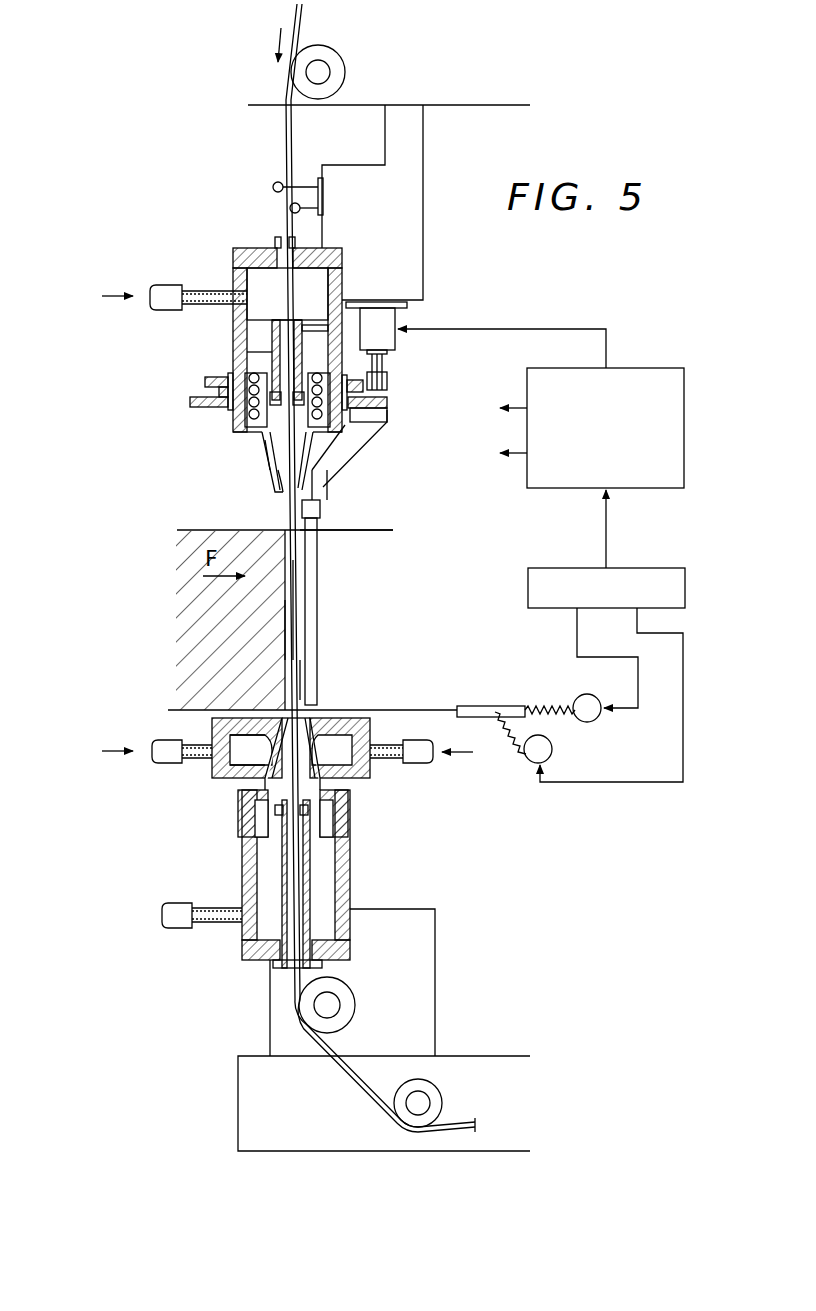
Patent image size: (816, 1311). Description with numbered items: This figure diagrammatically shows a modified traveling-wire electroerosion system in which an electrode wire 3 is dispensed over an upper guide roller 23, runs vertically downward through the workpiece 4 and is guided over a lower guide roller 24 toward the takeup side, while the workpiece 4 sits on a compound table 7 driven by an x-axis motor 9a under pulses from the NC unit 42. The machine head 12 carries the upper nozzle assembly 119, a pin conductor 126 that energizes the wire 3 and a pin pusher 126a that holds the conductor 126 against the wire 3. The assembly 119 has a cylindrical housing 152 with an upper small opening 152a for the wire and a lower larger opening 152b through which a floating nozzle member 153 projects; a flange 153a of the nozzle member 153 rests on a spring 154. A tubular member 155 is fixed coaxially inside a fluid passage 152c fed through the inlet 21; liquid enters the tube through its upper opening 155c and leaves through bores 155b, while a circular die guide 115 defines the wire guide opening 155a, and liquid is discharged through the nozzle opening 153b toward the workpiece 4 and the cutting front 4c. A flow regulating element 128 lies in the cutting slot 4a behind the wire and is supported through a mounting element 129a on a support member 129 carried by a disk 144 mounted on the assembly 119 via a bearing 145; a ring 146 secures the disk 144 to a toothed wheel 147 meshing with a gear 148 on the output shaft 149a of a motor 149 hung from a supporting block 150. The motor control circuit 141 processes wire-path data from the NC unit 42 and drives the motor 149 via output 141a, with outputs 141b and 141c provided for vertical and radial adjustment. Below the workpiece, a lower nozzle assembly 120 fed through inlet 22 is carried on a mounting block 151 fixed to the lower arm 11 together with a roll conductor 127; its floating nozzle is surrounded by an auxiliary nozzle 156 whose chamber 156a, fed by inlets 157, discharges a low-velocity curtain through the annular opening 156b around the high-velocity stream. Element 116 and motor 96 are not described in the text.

The electrode wire 3 is at (284, 40).
The upper guide roller 23 is at (346, 74).
The machine head 12 is at (455, 108).
The supporting block 150 is at (424, 186).
The pin pusher 126a is at (278, 182).
The pin conductor 126 is at (290, 208).
The cylindrical housing 152 is at (235, 262).
The upper small opening 152a is at (283, 240).
The fluid passage 152c is at (322, 278).
The inlet 21 is at (165, 282).
The tubular member 155 is at (262, 334).
The upper opening 155c is at (315, 322).
The bores 155b is at (245, 352).
The upper nozzle assembly 119 is at (225, 366).
The toothed wheel 147 is at (210, 378).
The ring 146 is at (205, 395).
The bearing 145 is at (243, 405).
The nozzle opening 153b is at (290, 497).
The motor 149 is at (392, 332).
The flange 153a is at (379, 366).
The output shaft 149a is at (389, 383).
The gear 148 is at (388, 405).
The disk 144 is at (388, 420).
The support member 129 is at (350, 440).
The circular die guide 115 is at (322, 478).
The mounting element 129a is at (320, 512).
The flow regulating element 128 is at (318, 576).
The nozzle member 153 is at (266, 472).
The lower larger opening 152b is at (247, 432).
The spring 154 is at (262, 430).
The wire guide opening 155a is at (280, 495).
The workpiece 4 is at (192, 530).
The cutting slot 4a is at (378, 544).
The cutting front 4c is at (282, 625).
The auxiliary nozzle 156 is at (372, 726).
The annular nozzle opening 156b is at (272, 732).
The chamber 156a is at (248, 772).
The inlets 157 is at (182, 762).
The guide block 116 is at (328, 810).
The lower nozzle assembly 120 is at (204, 888).
The inlet 22 is at (178, 930).
The mounting block 151 is at (434, 957).
The conductor 127 is at (354, 1005).
The lower arm 11 is at (484, 1056).
The lower guide roller 24 is at (443, 1103).
The motor control circuit 141 is at (612, 493).
The output 141a is at (608, 350).
The output 141b is at (520, 406).
The output 141c is at (520, 456).
The NC unit 42 is at (532, 566).
The motor 96 is at (592, 697).
The compound table 7 is at (478, 712).
The x-axis motor 9a is at (553, 752).